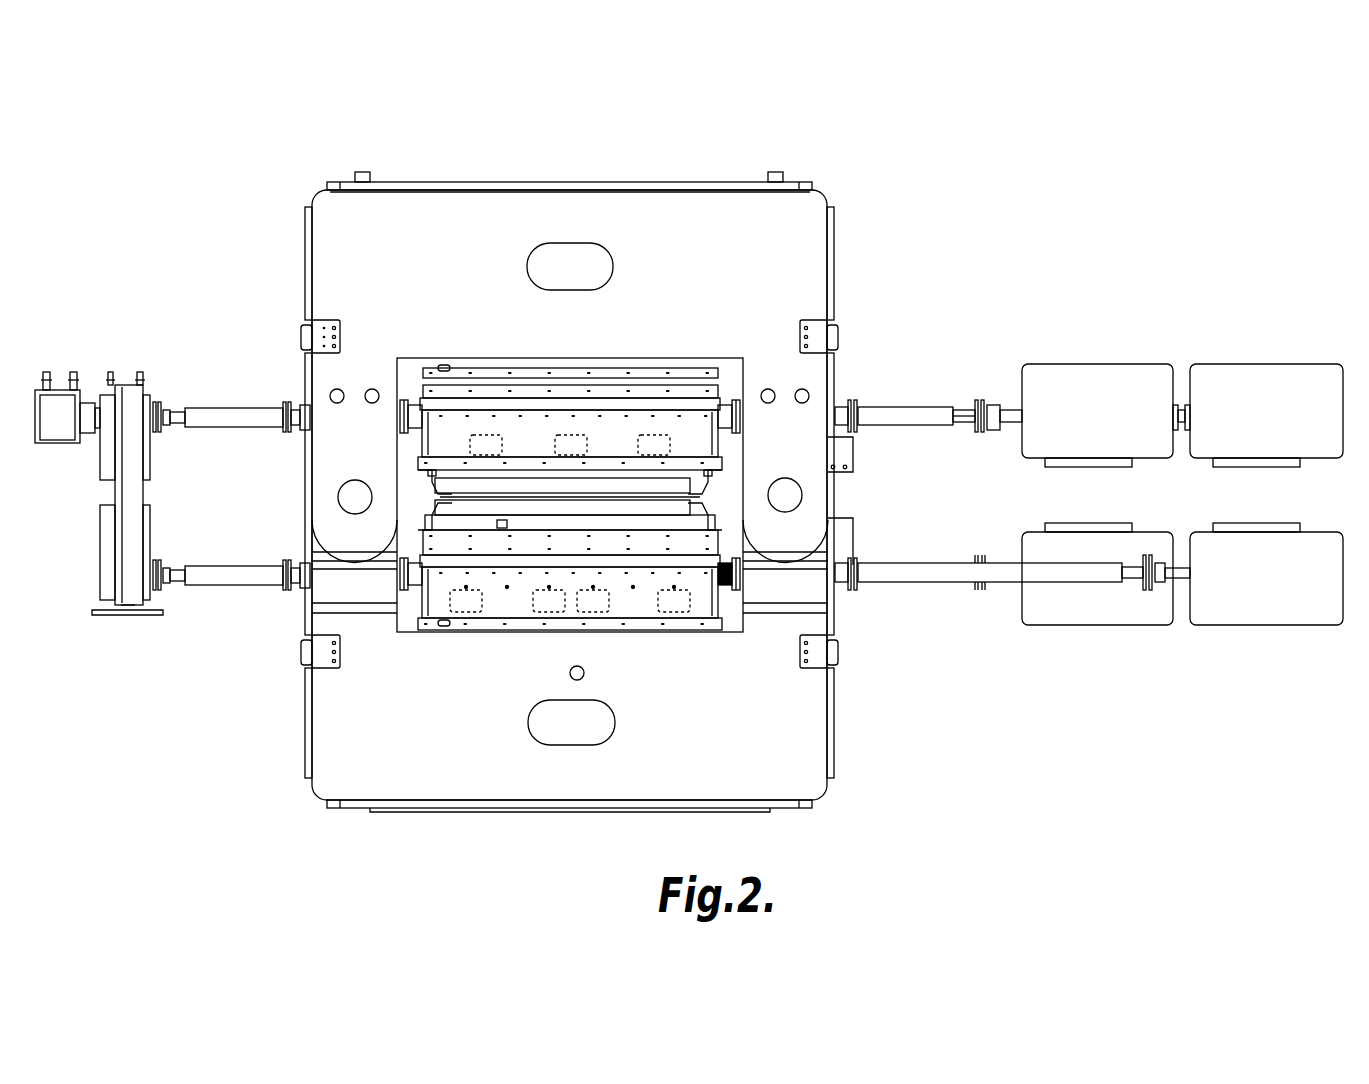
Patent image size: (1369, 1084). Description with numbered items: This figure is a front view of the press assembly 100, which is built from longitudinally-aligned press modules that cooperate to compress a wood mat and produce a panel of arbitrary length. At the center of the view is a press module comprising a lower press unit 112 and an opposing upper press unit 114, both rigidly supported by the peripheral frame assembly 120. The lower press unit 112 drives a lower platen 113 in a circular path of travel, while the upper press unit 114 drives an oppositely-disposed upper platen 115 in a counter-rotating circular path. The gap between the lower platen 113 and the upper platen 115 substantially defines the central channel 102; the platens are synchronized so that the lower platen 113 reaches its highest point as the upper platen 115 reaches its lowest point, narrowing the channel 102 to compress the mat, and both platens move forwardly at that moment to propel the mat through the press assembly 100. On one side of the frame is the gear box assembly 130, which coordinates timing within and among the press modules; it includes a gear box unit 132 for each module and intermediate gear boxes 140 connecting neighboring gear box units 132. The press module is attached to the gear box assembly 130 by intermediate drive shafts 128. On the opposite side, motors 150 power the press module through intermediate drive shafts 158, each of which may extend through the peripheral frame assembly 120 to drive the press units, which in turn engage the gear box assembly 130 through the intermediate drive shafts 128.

The press assembly 100 is at (525, 462).
The central channel 102 is at (463, 497).
The lower press unit 112 is at (723, 600).
The lower platen 113 is at (682, 508).
The upper press unit 114 is at (418, 395).
The upper platen 115 is at (683, 482).
The peripheral frame assembly 120 is at (442, 205).
The intermediate drive shaft 128 is at (233, 408).
The gear box assembly 130 is at (102, 450).
The gear box unit 132 is at (123, 572).
The intermediate gear box 140 is at (55, 438).
The motor 150 is at (1113, 418).
The intermediate drive shaft 158 is at (913, 410).